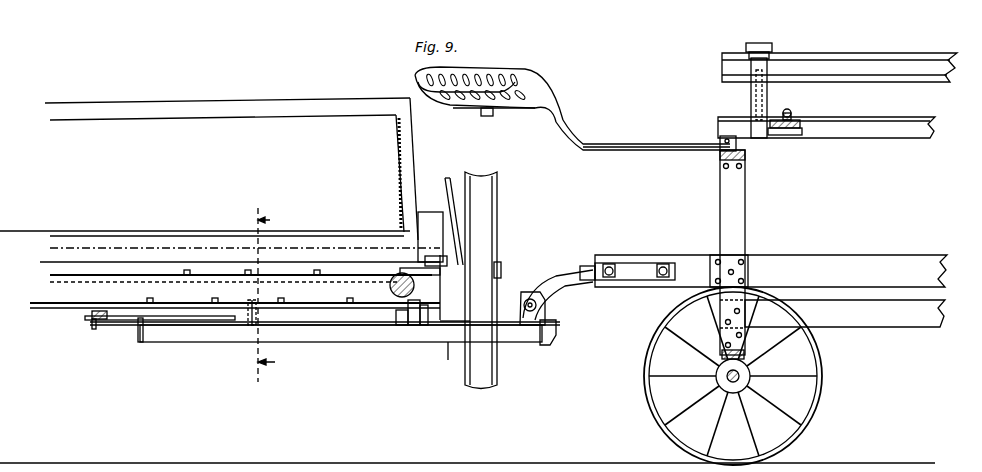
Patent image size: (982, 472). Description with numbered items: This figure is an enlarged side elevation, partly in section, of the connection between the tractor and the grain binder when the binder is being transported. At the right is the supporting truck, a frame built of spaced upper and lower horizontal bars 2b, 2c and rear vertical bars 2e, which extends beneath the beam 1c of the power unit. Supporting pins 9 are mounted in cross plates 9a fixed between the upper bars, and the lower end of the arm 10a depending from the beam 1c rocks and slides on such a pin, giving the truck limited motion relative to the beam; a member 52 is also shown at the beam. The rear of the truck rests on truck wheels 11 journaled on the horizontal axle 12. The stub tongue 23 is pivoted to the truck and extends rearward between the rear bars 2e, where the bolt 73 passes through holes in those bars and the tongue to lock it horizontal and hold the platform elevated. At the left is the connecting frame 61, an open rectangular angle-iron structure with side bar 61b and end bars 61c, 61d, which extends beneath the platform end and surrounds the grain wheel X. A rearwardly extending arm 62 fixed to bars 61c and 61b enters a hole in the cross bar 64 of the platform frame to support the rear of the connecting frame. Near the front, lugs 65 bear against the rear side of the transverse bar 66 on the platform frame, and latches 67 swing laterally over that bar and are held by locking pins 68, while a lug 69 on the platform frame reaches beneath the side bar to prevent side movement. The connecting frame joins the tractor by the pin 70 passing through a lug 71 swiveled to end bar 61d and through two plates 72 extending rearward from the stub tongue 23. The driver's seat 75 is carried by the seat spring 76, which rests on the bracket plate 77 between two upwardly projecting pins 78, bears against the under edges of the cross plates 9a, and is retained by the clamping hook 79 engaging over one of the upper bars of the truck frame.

The beam 1c is at (871, 68).
The frame bar 52 is at (910, 62).
The arm 10a is at (751, 100).
The clamping hook 79 is at (791, 112).
The pins 78 is at (721, 138).
The supporting pins 9 is at (801, 128).
The cross plates 9a is at (802, 134).
The upper horizontal bars 2b is at (896, 126).
The bracket plate 77 is at (720, 157).
The rear vertical bars 2e is at (746, 200).
The seat 75 is at (538, 98).
The seat spring 76 is at (582, 150).
The grain wheel X is at (494, 215).
The plates 72 is at (567, 270).
The stub tongue 23 is at (630, 258).
The bolt 73 is at (734, 269).
The pin 70 is at (530, 299).
The lug 71 is at (546, 318).
The end bar 61d is at (555, 333).
The lower horizontal bars 2c is at (874, 318).
The truck wheels 11 is at (823, 398).
The axle 12 is at (723, 392).
The cross bar 64 is at (92, 316).
The rearwardly extending arm 62 is at (108, 323).
The end bar 61c is at (140, 343).
The connecting frame 61 is at (325, 341).
The lug 69 is at (258, 318).
The side bar 61b is at (323, 343).
The lugs 65 is at (400, 326).
The transverse bar 66 is at (413, 326).
The latches 67 is at (424, 326).
The locking pins 68 is at (448, 326).